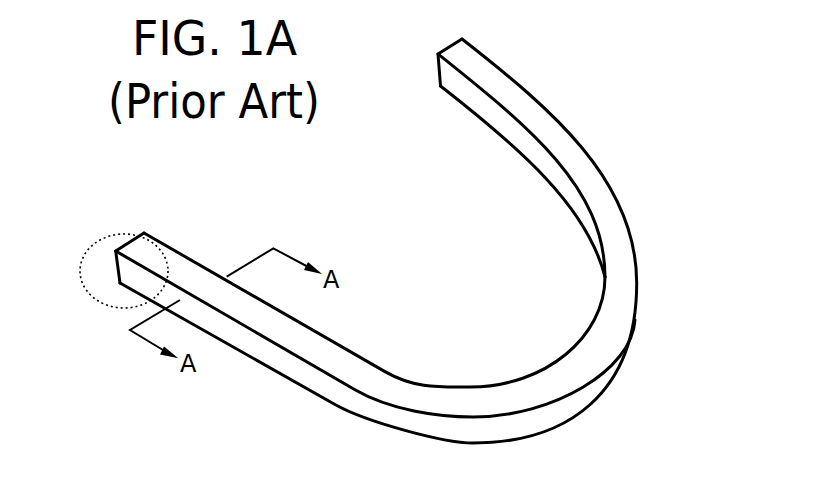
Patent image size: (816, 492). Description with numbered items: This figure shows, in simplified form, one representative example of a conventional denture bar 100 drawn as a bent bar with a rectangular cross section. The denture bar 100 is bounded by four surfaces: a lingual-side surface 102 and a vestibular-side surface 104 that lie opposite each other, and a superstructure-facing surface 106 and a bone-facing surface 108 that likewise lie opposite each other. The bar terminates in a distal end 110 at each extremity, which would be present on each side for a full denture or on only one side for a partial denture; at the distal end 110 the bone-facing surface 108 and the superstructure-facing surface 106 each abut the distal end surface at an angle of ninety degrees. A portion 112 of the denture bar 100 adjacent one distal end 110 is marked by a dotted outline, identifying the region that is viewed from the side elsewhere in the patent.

The denture bar 100 is at (377, 248).
The lingual-side surface 102 is at (472, 100).
The vestibular-side surface 104 is at (270, 352).
The superstructure-facing surface 106 is at (185, 270).
The bone-facing surface 108 is at (270, 367).
The distal end 110 is at (438, 70).
The portion 112 is at (105, 297).